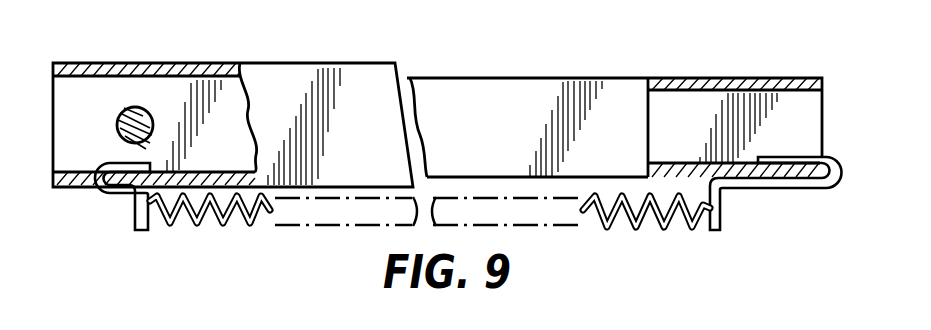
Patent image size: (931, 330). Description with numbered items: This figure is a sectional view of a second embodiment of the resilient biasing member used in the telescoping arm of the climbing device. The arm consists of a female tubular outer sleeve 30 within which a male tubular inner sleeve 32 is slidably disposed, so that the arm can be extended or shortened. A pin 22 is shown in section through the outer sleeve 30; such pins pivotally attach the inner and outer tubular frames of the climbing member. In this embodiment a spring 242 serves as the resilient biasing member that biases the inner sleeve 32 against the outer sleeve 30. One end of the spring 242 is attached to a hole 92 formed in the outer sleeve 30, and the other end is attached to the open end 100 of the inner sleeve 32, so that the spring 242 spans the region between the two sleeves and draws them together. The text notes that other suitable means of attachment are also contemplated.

The pin 22 is at (121, 121).
The female tubular outer sleeve 30 is at (355, 65).
The male tubular inner sleeve 32 is at (515, 78).
The hole 92 is at (88, 170).
The open end 100 is at (824, 140).
The spring 242 is at (230, 224).